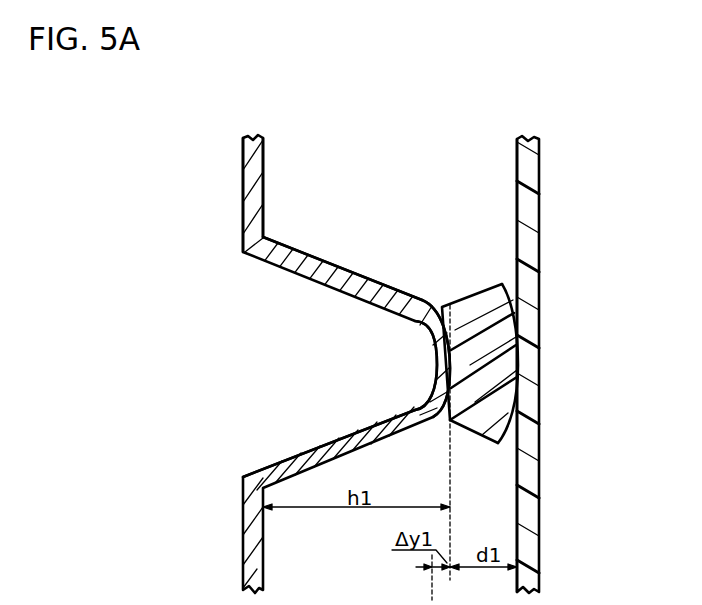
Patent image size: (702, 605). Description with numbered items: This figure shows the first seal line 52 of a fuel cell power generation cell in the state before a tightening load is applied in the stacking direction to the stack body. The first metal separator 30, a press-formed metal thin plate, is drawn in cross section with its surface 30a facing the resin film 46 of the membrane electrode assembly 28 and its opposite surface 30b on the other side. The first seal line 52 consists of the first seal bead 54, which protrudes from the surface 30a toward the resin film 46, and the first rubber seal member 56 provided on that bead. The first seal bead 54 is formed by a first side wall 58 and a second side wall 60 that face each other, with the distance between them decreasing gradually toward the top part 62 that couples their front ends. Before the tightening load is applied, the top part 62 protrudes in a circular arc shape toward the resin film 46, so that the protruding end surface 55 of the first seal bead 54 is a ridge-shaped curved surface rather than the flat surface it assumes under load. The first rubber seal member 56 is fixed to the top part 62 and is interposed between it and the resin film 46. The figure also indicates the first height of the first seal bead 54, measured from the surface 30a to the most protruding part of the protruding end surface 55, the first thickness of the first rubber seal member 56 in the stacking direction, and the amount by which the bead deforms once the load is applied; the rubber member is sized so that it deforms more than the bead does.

The membrane electrode assembly 28 is at (528, 128).
The first metal separator 30 is at (254, 128).
The surface of the first metal separator 30a is at (262, 177).
The surface of the first metal separator 30b is at (245, 177).
The resin film 46 is at (521, 164).
The first seal line 52 is at (483, 219).
The first seal bead 54 is at (405, 296).
The protruding end surface 55 is at (455, 351).
The first rubber seal member 56 is at (480, 302).
The first side wall 58 is at (347, 278).
The second side wall 60 is at (337, 444).
The top part 62 is at (447, 358).